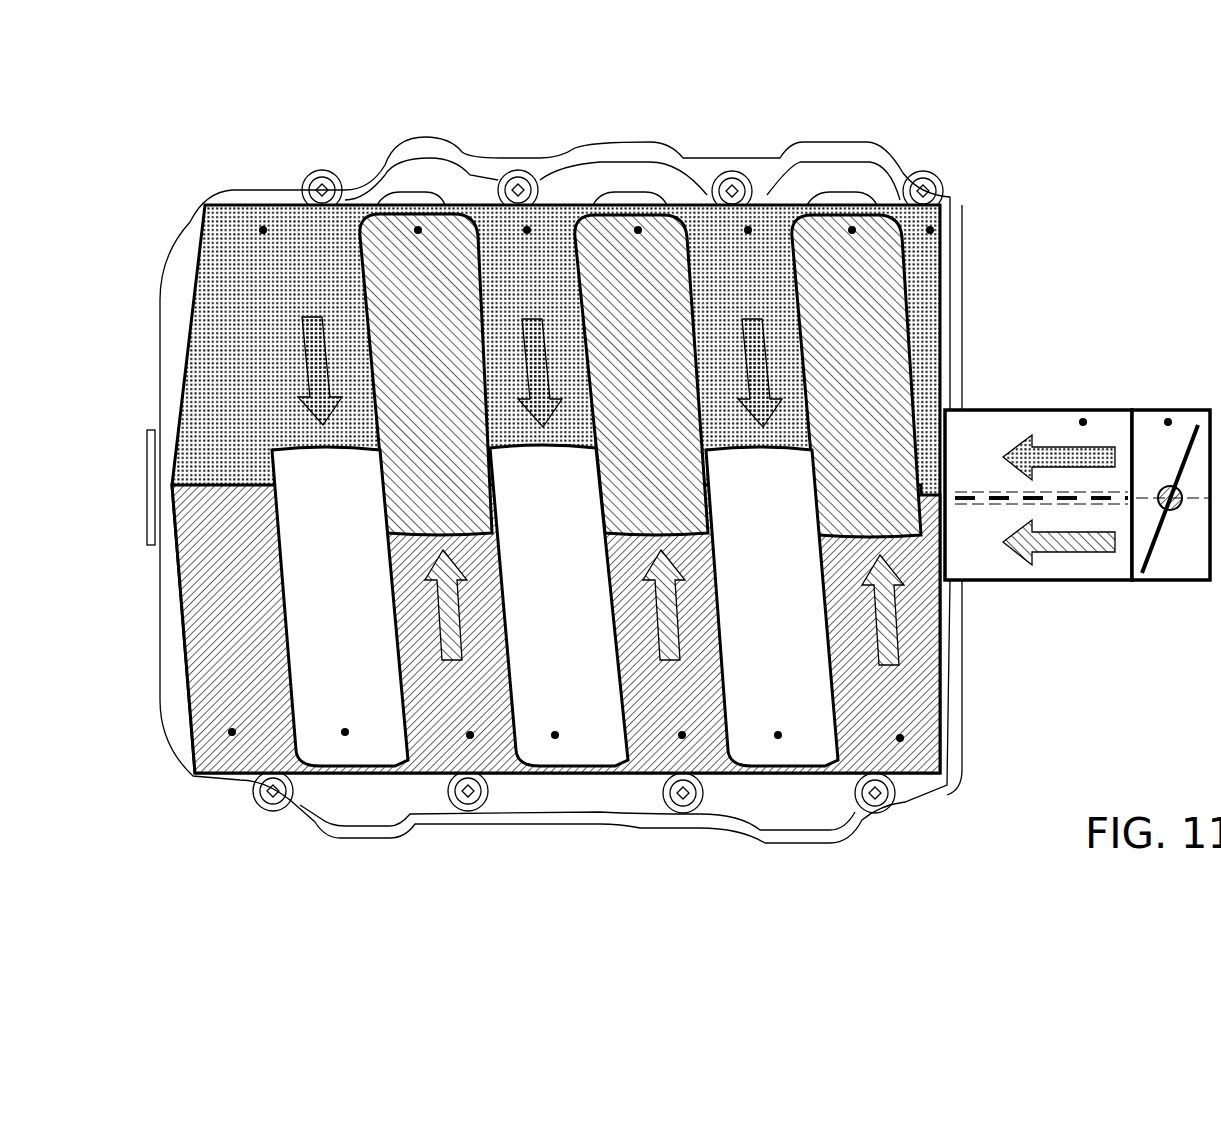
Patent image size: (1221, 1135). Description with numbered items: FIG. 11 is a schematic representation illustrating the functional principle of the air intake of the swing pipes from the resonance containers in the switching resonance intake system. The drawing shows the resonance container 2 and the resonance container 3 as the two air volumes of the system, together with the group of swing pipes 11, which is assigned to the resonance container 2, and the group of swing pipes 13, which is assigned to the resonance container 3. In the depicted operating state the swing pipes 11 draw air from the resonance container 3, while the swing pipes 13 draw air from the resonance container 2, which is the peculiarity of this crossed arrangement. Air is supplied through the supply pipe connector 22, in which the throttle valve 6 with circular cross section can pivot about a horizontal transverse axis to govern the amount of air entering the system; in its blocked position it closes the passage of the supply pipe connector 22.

The resonance container 2 is at (263, 230).
The resonance container 3 is at (232, 732).
The swing pipes 11 is at (418, 230).
The swing pipes 13 is at (345, 732).
The supply pipe connector 22 is at (1083, 422).
The throttle valve 6 is at (1168, 422).